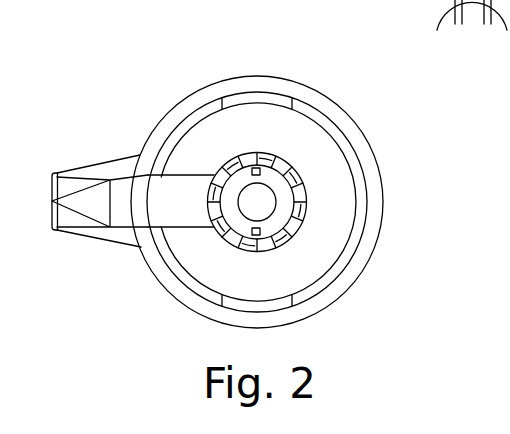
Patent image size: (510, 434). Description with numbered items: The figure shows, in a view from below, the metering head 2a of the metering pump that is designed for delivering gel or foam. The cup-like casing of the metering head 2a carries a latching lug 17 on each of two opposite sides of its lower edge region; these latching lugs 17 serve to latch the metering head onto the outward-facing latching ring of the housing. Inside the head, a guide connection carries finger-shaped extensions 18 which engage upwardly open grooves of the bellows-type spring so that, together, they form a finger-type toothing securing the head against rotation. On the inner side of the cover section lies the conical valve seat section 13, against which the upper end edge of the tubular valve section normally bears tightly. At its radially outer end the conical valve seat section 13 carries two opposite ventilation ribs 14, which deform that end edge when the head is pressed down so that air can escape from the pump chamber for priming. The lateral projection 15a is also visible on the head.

The metering head 2a is at (318, 81).
The conical valve seat section 13 is at (240, 178).
The ventilation ribs 14 is at (262, 172).
The handle lug 15a is at (84, 224).
The latching lugs 17 is at (256, 100).
The finger-shaped extensions 18 is at (252, 160).